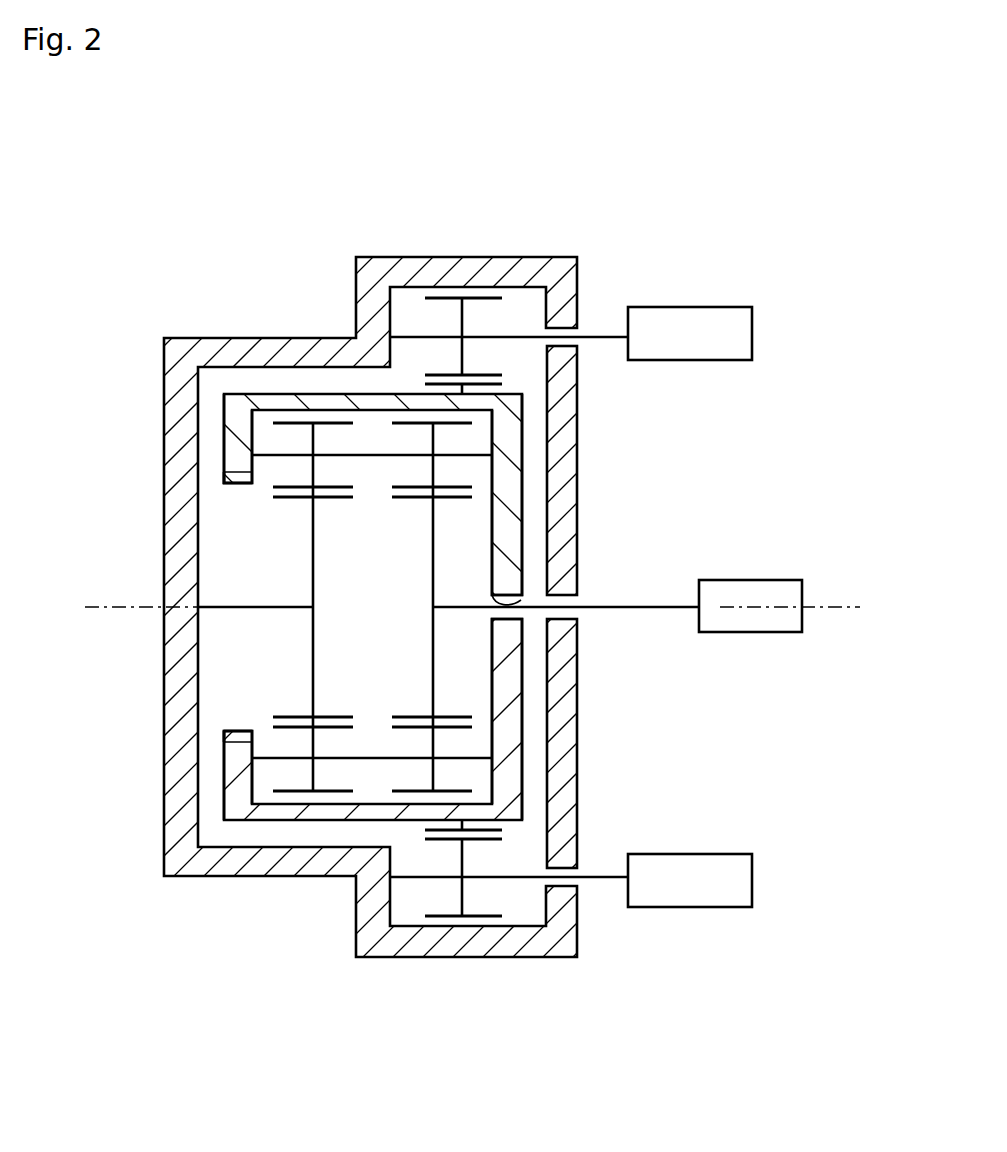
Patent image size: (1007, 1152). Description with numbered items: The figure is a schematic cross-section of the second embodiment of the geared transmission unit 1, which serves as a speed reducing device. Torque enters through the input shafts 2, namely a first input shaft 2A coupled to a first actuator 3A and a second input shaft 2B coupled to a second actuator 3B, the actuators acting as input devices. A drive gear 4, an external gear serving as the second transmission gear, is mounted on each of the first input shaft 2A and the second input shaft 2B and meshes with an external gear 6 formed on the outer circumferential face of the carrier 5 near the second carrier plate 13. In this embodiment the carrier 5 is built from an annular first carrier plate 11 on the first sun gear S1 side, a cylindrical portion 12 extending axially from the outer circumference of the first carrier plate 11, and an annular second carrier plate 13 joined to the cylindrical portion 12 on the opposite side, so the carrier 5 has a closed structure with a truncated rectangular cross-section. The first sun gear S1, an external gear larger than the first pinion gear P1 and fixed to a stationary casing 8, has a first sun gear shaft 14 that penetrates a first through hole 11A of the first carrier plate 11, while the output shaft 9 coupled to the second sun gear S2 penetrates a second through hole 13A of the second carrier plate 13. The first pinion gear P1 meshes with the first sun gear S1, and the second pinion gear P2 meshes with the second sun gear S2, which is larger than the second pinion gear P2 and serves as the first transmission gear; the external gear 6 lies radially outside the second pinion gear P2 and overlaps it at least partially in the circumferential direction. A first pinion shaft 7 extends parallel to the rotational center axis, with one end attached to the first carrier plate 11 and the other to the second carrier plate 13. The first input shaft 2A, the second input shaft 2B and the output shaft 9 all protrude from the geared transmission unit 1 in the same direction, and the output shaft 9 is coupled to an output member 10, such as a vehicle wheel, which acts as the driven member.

The geared transmission unit 1 is at (503, 170).
The input shafts 2 is at (525, 568).
The first input shaft 2A is at (602, 337).
The second input shaft 2B is at (602, 877).
The first actuator 3A is at (700, 307).
The second actuator 3B is at (700, 854).
The drive gear 4 is at (490, 298).
The carrier 5 is at (297, 375).
The external gear 6 is at (428, 384).
The first pinion shaft 7 is at (370, 458).
The casing 8 is at (171, 576).
The output shaft 9 is at (680, 606).
The output member 10 is at (745, 580).
The first carrier plate 11 is at (233, 444).
The first through hole 11A is at (242, 486).
The cylindrical portion 12 is at (330, 400).
The second carrier plate 13 is at (507, 436).
The second through hole 13A is at (521, 600).
The first sun gear shaft 14 is at (250, 606).
The first pinion gear P1 is at (280, 420).
The second pinion gear P2 is at (398, 420).
The first sun gear S1 is at (283, 716).
The second sun gear S2 is at (455, 716).